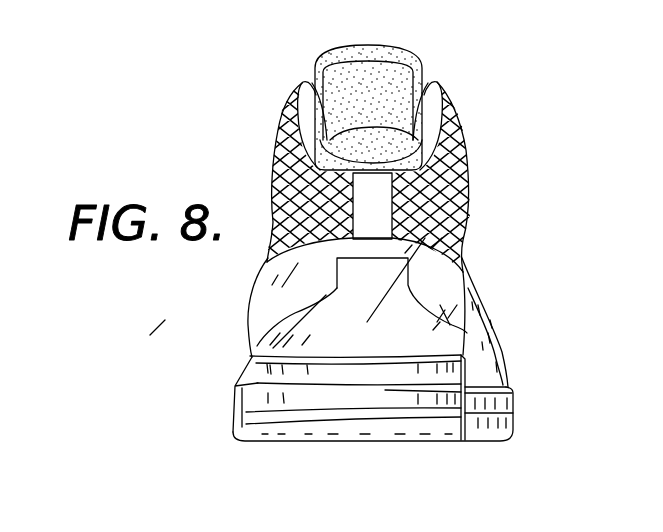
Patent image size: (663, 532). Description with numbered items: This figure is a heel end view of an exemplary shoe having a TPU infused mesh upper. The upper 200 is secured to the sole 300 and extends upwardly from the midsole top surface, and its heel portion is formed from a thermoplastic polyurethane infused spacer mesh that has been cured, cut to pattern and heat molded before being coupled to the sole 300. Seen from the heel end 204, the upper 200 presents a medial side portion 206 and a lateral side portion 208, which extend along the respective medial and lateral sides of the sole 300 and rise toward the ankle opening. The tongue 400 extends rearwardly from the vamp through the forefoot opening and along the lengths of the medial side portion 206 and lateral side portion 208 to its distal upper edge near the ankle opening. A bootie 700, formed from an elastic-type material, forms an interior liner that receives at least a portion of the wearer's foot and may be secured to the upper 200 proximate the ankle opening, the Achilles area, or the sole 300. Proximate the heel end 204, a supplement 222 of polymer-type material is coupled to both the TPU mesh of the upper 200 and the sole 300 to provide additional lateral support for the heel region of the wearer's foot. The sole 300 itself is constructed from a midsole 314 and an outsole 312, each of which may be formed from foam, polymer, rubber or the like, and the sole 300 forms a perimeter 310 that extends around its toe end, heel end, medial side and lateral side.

The upper 200 is at (282, 103).
The heel end 204 is at (396, 298).
The medial side portion 206 is at (497, 149).
The lateral side portion 208 is at (271, 200).
The supplement 222 is at (263, 298).
The sole 300 is at (434, 409).
The perimeter 310 is at (515, 379).
The outsole 312 is at (338, 444).
The midsole 314 is at (313, 397).
The tongue 400 is at (380, 44).
The bootie 700 is at (389, 135).